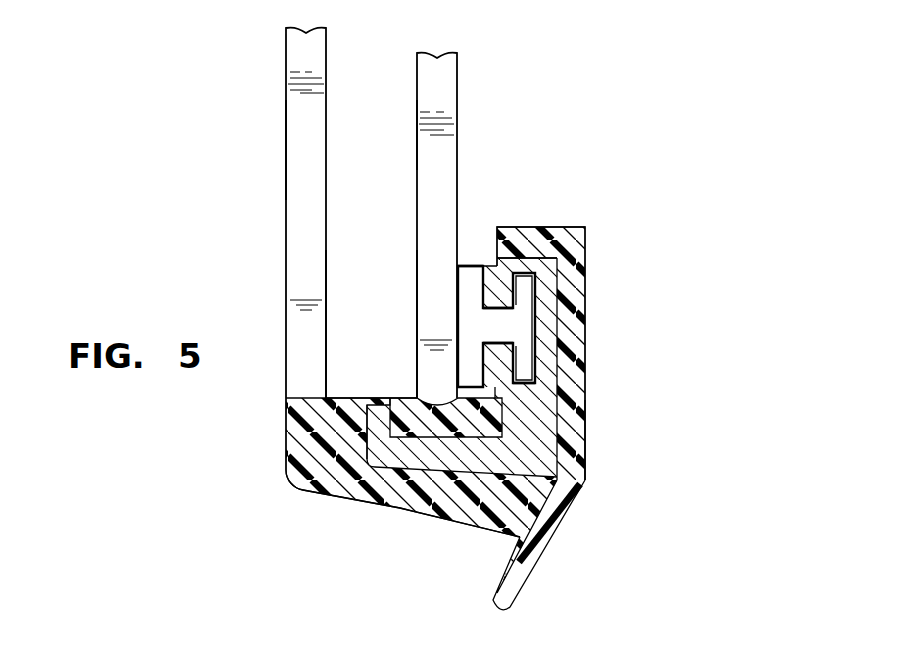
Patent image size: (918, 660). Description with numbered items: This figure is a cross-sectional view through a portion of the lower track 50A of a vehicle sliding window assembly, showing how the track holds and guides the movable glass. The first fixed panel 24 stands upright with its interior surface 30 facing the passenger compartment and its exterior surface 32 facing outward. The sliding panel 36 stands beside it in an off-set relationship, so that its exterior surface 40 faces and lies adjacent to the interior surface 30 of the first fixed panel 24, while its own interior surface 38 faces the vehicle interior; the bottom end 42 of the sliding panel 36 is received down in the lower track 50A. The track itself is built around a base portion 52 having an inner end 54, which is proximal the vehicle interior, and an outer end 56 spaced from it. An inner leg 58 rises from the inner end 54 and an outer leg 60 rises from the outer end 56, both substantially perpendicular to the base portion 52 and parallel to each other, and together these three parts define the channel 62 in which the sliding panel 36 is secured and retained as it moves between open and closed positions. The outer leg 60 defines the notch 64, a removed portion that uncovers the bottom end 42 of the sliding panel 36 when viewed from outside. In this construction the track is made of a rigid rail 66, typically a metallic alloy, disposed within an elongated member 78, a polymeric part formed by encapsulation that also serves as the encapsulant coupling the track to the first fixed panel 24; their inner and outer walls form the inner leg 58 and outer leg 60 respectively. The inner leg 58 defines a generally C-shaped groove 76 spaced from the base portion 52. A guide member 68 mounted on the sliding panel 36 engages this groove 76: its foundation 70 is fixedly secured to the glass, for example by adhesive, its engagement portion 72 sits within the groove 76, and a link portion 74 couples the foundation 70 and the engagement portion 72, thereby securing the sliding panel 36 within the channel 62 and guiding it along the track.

The first fixed panel 24 is at (286, 90).
The interior surface 30 is at (338, 62).
The exterior surface 32 is at (268, 139).
The sliding panel 36 is at (458, 108).
The interior surface 38 is at (469, 135).
The exterior surface 40 is at (407, 135).
The bottom end 42 is at (368, 303).
The lower track 50A is at (612, 200).
The base portion 52 is at (437, 452).
The inner end 54 is at (575, 512).
The outer end 56 is at (336, 512).
The inner leg 58 is at (545, 320).
The outer leg 60 is at (373, 428).
The channel 62 is at (497, 237).
The notch 64 is at (385, 382).
The rail 66 is at (530, 438).
The guide member 68 is at (467, 265).
The foundation 70 is at (467, 290).
The engagement portion 72 is at (523, 358).
The link portion 74 is at (497, 325).
The groove 76 is at (520, 380).
The elongated member 78 is at (572, 462).